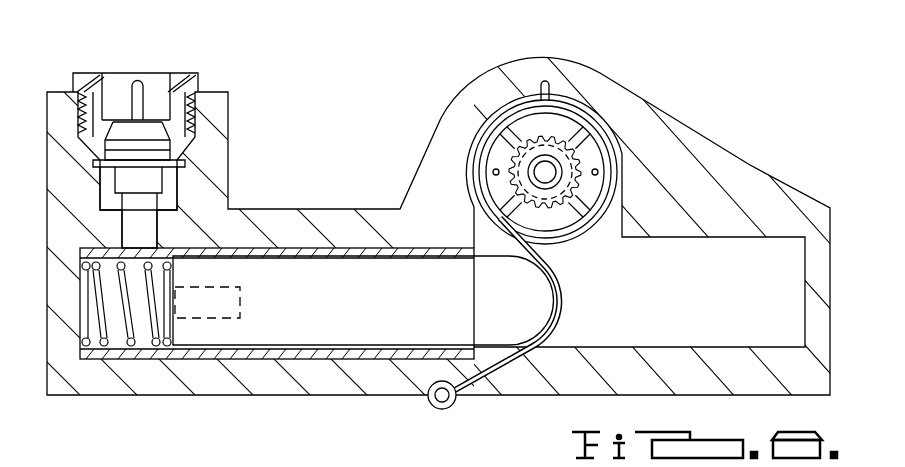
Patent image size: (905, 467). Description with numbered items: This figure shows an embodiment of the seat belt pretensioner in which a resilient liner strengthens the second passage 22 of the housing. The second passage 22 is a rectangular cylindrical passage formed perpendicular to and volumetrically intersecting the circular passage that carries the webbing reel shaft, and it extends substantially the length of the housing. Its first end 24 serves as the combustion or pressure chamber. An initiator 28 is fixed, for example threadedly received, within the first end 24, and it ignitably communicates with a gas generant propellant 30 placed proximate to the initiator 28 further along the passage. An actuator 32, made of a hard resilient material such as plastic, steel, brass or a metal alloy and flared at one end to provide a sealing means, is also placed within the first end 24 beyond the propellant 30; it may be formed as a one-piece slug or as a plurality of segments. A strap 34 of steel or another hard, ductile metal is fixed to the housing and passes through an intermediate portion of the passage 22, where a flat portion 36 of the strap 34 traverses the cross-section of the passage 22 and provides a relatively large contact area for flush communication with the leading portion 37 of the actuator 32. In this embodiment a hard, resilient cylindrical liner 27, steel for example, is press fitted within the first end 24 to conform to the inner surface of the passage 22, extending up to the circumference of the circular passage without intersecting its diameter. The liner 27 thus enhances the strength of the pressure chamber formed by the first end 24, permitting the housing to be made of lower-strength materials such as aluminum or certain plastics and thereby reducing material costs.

The second passage 22 is at (617, 270).
The first end 24 is at (257, 340).
The cylindrical liner 27 is at (322, 362).
The initiator 28 is at (142, 90).
The gas generant propellant 30 is at (207, 292).
The actuator 32 is at (328, 290).
The strap 34 is at (500, 370).
The flat portion 36 is at (560, 315).
The leading portion 37 is at (552, 300).